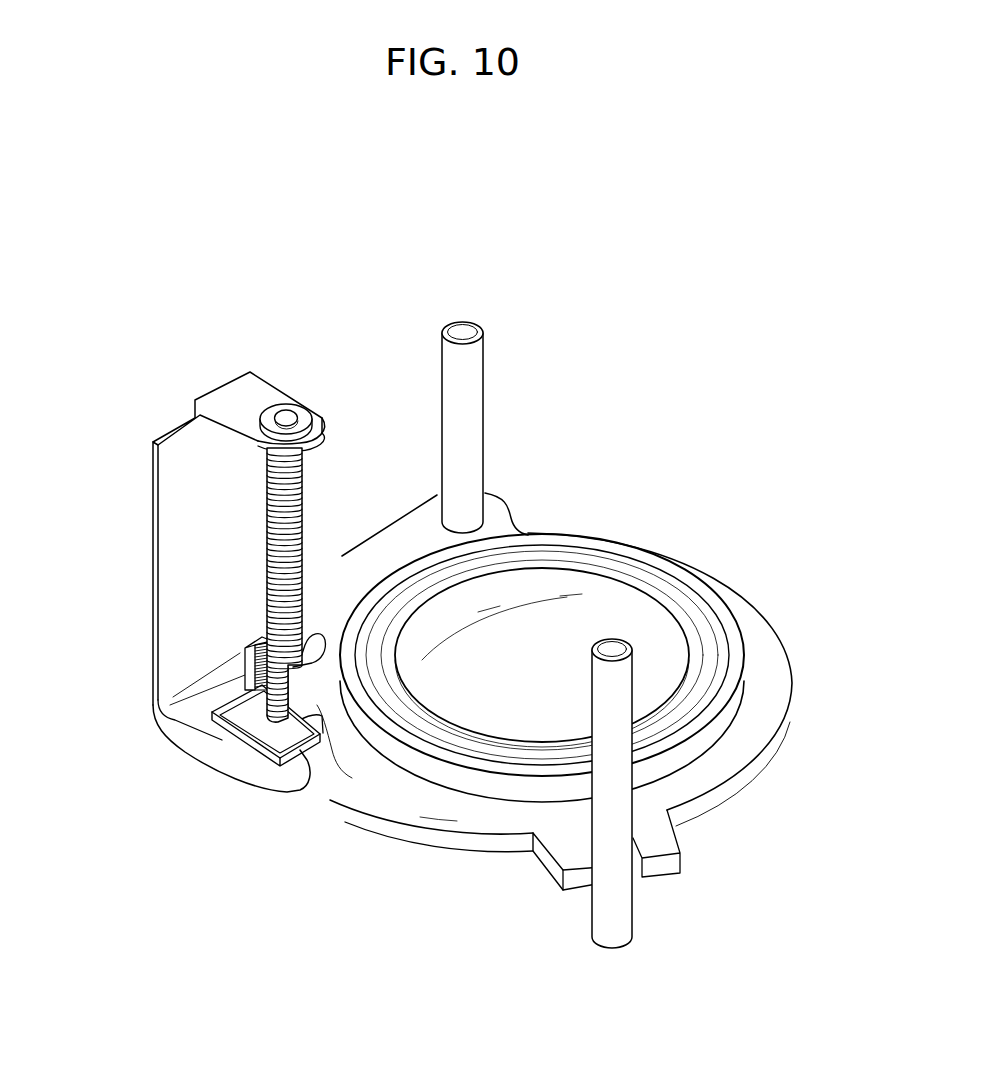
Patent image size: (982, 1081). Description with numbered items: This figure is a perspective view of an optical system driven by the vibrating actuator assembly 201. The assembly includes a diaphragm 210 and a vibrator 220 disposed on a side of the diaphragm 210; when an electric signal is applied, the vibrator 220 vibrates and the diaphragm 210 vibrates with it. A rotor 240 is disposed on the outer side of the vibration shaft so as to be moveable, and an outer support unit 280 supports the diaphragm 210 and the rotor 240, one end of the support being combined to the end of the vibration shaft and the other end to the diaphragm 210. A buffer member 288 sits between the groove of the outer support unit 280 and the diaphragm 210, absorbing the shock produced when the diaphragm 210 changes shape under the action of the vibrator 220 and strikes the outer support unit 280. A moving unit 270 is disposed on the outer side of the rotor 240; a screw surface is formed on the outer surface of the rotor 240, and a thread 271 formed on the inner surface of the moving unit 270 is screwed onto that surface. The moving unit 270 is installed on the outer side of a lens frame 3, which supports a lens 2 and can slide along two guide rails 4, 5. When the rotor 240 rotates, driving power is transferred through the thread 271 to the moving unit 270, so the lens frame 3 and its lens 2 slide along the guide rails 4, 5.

The lens 2 is at (623, 607).
The lens frame 3 is at (588, 691).
The guide rail 4 is at (623, 803).
The guide rail 5 is at (468, 364).
The vibrating actuator assembly 201 is at (214, 340).
The outer support unit 280 is at (200, 529).
The buffer member 288 is at (306, 768).
The rotor 240 is at (256, 546).
The moving unit 270 is at (176, 644).
The thread 271 is at (240, 677).
The diaphragm 210 is at (247, 715).
The vibrator 220 is at (227, 731).